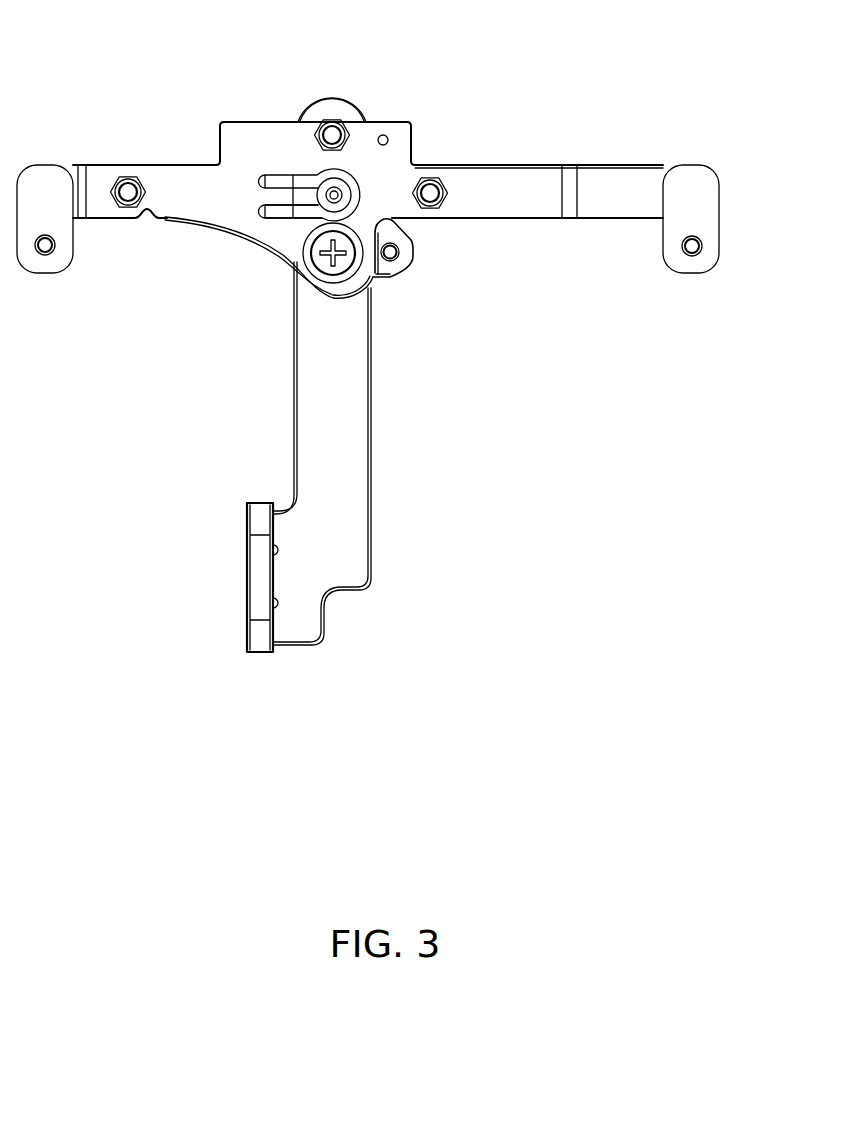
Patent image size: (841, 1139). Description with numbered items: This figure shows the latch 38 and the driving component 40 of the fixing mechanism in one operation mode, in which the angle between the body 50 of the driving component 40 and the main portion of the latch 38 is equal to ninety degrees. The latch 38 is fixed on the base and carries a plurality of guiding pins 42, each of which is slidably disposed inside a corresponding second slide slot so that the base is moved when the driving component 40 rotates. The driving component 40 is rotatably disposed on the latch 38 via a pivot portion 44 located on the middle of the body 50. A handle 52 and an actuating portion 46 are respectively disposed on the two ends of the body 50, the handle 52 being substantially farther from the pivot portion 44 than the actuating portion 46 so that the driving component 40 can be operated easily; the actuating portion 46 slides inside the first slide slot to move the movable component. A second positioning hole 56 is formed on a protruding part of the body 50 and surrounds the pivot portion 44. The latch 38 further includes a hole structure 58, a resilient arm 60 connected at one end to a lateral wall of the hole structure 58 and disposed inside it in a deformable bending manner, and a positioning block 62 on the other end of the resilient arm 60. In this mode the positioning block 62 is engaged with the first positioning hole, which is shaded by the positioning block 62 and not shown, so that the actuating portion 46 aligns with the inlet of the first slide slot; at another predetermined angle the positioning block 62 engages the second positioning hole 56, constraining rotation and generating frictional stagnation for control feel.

The latch 38 is at (624, 185).
The driving component 40 is at (368, 210).
The guiding pin 42 is at (128, 188).
The pivot portion 44 is at (338, 262).
The actuating portion 46 is at (333, 136).
The body 50 is at (315, 415).
The handle 52 is at (260, 518).
The second positioning hole 56 is at (394, 254).
The hole structure 58 is at (280, 178).
The resilient arm 60 is at (278, 196).
The positioning block 62 is at (322, 195).